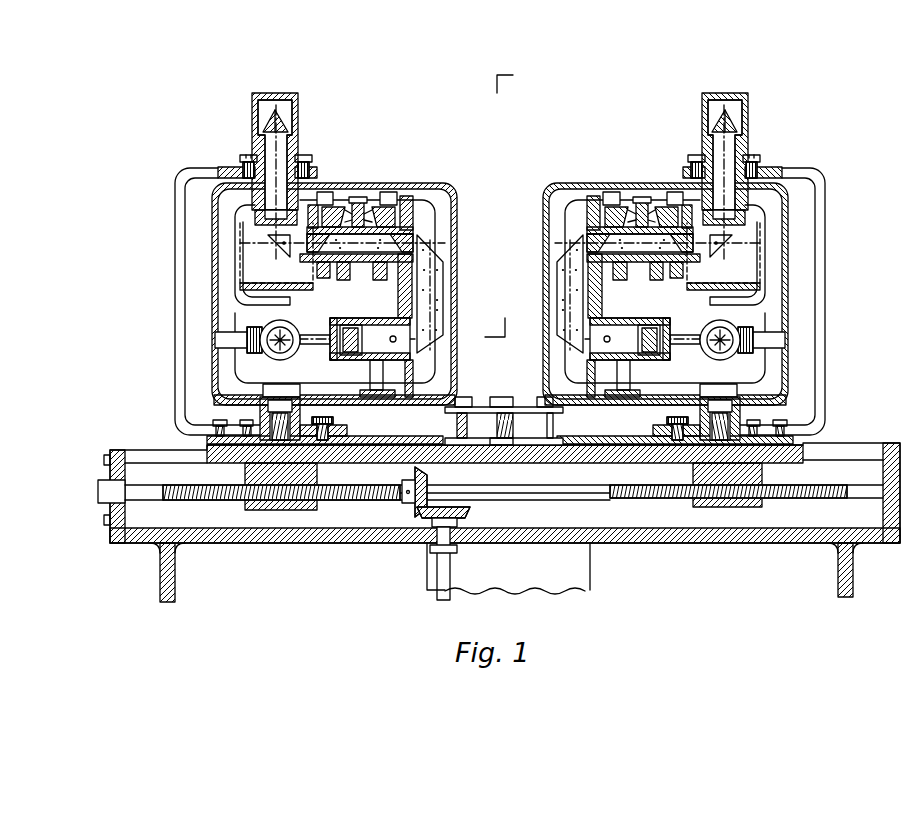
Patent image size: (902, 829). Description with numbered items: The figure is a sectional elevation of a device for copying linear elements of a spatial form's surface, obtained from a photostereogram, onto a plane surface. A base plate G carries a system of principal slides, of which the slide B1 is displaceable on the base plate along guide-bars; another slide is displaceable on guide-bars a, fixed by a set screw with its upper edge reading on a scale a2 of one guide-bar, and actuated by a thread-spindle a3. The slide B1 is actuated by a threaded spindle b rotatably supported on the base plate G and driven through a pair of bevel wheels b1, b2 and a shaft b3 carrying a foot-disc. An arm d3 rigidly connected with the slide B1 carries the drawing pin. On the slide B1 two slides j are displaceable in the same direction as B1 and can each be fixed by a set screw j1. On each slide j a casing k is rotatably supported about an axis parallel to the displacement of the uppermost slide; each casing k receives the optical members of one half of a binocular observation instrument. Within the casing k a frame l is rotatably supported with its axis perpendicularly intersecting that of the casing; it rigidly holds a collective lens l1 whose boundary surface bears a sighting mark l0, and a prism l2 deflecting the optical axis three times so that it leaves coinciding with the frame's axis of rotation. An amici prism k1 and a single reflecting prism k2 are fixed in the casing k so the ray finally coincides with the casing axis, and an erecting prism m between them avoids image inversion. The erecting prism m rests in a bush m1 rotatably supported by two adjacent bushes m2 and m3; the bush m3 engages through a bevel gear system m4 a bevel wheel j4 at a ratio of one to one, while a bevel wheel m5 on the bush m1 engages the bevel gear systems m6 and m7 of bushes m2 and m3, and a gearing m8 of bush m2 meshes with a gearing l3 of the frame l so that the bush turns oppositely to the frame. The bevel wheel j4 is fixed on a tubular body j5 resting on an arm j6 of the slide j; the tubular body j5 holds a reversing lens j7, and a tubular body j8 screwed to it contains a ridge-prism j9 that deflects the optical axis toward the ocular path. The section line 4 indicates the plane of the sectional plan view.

The section line 4- 4 is at (163, 340).
The casing k is at (457, 197).
The amici prism k1 is at (433, 290).
The single reflecting prism k2 is at (283, 246).
The slide j is at (262, 417).
The set screw j1 is at (335, 422).
The bevel wheel j4 is at (236, 282).
The tubular body j5 is at (298, 150).
The arm j6 is at (178, 270).
The reversing lens j7 is at (270, 248).
The tubular body j8 is at (298, 108).
The ridge-prism j9 is at (263, 120).
The frame l is at (330, 339).
The sighting mark l0 is at (272, 357).
The collective lens l1 is at (288, 355).
The prism l2 is at (348, 352).
The gearing l3 is at (410, 383).
The erecting prism m is at (500, 243).
The bush m1 is at (415, 230).
The bush m2 is at (400, 282).
The bush m3 is at (318, 258).
The bevel gear system m4 is at (315, 203).
The bevel wheel m5 is at (362, 203).
The bevel gear system m6 is at (344, 281).
The bevel gear system m7 is at (325, 280).
The gearing m8 is at (407, 198).
The guide-bar a is at (563, 425).
The scale a2 is at (458, 430).
The thread-spindle a3 is at (516, 425).
The arm d3 is at (530, 446).
The spindle b is at (575, 494).
The bevel wheel b1 is at (427, 478).
The bevel wheel b2 is at (470, 513).
The shaft b3 is at (437, 573).
The slide B1 is at (413, 455).
The base plate G is at (703, 541).